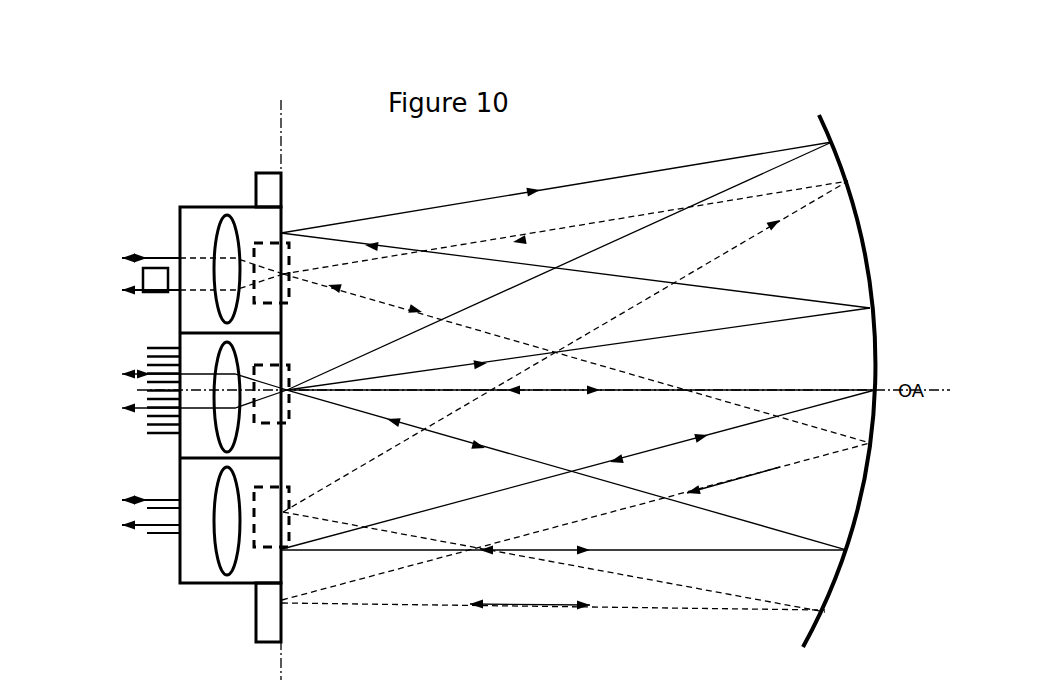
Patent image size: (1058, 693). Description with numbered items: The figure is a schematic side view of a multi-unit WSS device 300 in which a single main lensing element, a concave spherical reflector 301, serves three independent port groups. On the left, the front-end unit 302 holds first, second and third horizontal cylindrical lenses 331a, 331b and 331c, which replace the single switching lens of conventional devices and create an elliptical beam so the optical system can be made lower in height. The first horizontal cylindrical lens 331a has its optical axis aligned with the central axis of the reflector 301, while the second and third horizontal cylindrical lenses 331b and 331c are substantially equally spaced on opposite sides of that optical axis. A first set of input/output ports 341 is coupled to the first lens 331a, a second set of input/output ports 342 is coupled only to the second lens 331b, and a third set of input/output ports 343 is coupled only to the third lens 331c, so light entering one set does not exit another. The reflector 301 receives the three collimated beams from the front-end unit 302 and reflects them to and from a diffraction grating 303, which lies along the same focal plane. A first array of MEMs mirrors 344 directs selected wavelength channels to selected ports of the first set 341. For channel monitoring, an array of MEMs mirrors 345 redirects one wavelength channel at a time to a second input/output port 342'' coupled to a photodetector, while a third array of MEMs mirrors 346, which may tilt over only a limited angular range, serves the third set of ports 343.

The multi-unit WSS device 300 is at (607, 132).
The spherical reflector 301 is at (840, 150).
The front-end unit 302 is at (160, 192).
The diffraction grating 303 is at (258, 172).
The first horizontal cylindrical lens 331a is at (225, 432).
The second horizontal cylindrical lens 331b is at (226, 225).
The third horizontal cylindrical lens 331c is at (226, 566).
The first set of input/output ports 341 is at (136, 353).
The second set of input/output ports 342 is at (123, 249).
The second input/output port 342'' is at (151, 293).
The third set of input/output ports 343 is at (136, 557).
The first array of MEMs mirrors 344 is at (289, 372).
The array of MEMs mirrors 345 is at (290, 302).
The third array of MEMs mirrors 346 is at (289, 490).